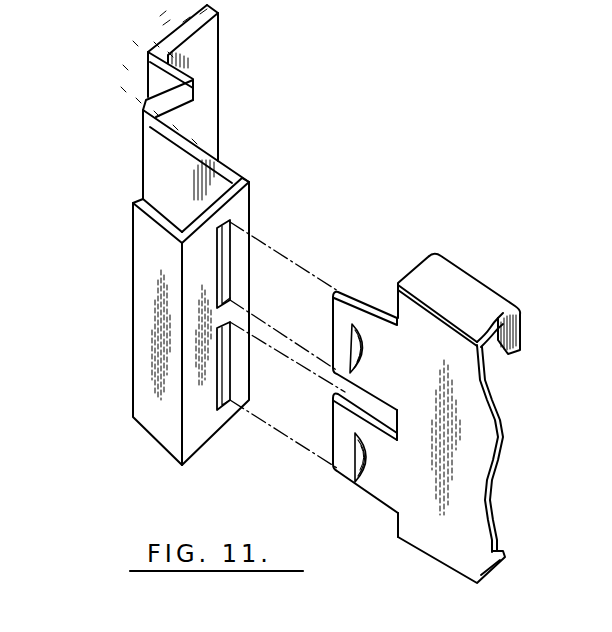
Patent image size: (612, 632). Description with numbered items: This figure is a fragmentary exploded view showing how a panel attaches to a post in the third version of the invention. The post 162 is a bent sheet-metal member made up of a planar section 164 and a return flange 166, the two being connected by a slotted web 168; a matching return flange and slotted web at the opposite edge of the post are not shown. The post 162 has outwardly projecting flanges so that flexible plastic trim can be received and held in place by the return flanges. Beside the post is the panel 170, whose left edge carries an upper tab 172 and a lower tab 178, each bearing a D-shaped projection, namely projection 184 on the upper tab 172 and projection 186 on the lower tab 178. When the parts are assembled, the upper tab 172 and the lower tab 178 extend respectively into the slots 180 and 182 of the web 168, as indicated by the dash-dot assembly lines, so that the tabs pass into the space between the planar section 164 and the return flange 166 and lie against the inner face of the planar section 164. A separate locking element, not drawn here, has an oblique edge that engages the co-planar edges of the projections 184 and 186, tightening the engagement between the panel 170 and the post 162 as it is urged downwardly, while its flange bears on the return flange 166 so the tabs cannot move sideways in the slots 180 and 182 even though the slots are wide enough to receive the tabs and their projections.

The post 162 is at (130, 134).
The planar section 164 is at (217, 158).
The return flange 166 is at (147, 258).
The slotted web 168 is at (202, 427).
The panel 170 is at (495, 414).
The upper tab 172 is at (350, 305).
The lower tab 178 is at (343, 467).
The slot 180 is at (228, 254).
The slot 182 is at (228, 370).
The D-shaped projection 184 is at (365, 377).
The D-shaped projection 186 is at (370, 455).